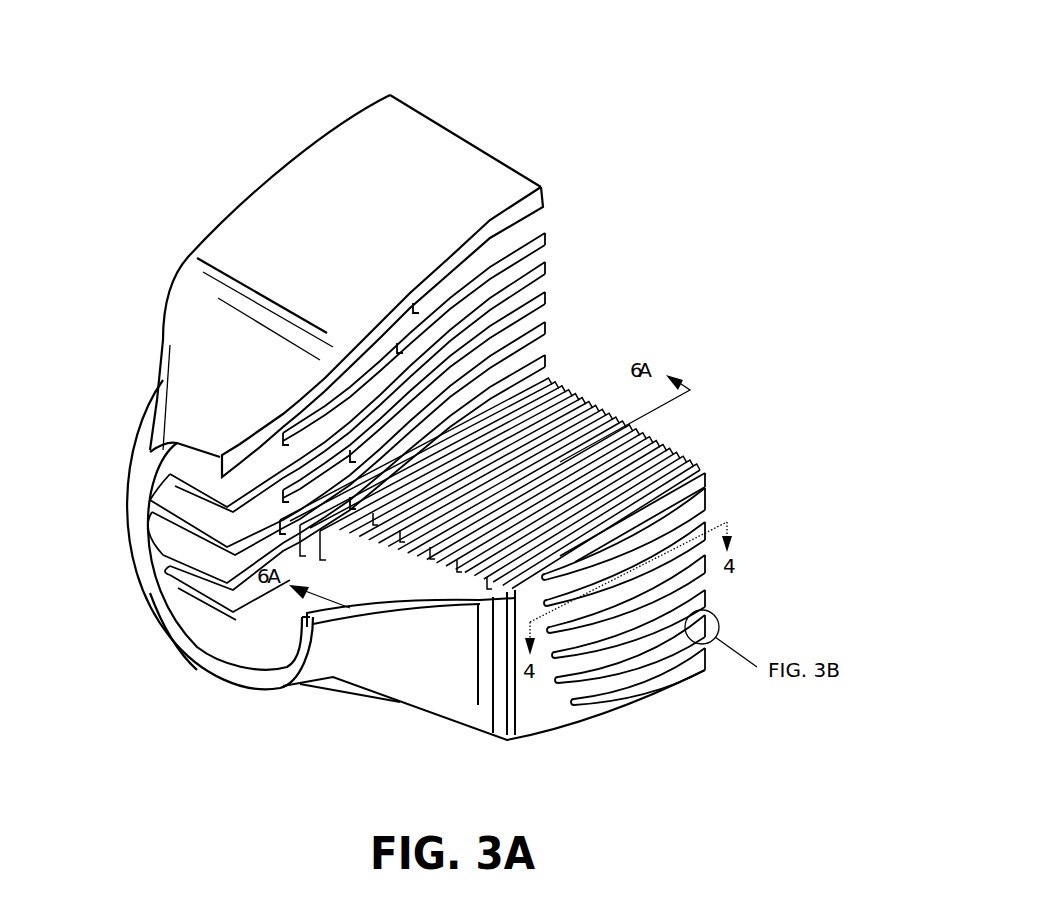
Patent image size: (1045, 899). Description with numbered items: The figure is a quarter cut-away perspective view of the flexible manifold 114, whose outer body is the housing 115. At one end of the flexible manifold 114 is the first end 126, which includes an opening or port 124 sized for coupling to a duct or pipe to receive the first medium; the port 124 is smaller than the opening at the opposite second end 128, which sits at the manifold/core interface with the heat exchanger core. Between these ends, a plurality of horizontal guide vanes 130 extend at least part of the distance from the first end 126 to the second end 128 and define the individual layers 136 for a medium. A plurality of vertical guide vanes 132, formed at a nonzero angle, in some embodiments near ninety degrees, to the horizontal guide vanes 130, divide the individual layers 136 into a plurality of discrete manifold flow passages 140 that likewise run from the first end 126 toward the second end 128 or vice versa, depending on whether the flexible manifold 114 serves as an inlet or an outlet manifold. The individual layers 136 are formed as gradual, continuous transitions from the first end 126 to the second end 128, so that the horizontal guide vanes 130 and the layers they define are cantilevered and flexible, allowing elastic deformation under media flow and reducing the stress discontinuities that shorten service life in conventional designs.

The flexible manifold 114 is at (588, 97).
The housing 115 is at (387, 223).
The port 124 is at (195, 668).
The first end 126 is at (98, 492).
The second end 128 is at (752, 524).
The horizontal guide vanes 130 is at (543, 300).
The vertical guide vanes 132 is at (560, 392).
The individual layers 136 is at (703, 590).
The discrete manifold flow passages 140 is at (543, 262).